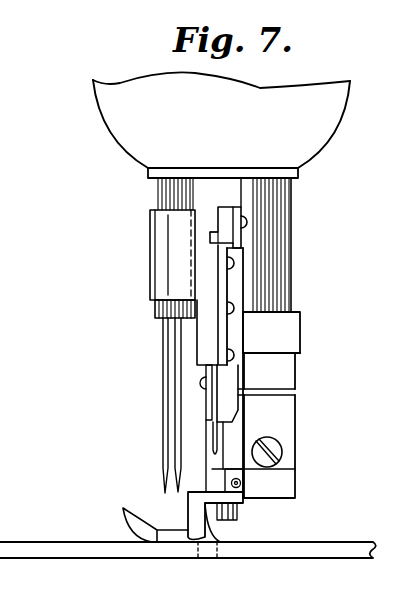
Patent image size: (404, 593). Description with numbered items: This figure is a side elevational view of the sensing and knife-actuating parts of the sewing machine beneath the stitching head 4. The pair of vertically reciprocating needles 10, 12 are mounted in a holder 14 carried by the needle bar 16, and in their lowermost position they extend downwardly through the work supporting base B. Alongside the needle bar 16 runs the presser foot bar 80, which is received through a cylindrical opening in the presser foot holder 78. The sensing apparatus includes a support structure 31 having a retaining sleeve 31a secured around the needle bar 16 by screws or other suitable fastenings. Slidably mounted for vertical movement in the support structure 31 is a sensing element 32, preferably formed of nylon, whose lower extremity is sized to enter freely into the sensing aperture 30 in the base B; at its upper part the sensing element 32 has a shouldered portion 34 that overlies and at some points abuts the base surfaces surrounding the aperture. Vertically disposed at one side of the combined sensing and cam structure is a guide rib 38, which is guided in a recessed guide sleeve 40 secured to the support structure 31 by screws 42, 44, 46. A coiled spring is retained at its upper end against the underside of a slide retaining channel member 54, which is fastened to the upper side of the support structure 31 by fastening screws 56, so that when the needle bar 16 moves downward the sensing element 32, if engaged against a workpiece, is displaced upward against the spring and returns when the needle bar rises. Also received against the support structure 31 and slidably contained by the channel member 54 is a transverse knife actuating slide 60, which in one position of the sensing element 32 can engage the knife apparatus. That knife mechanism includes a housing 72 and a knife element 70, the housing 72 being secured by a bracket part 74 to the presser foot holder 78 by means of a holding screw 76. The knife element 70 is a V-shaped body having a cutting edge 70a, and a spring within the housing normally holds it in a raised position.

The stitching head 4 is at (323, 127).
The needle bar 16 is at (168, 191).
The presser foot bar 80 is at (277, 192).
The retaining sleeve 31a is at (178, 250).
The holder 14 is at (168, 307).
The needle 10 is at (164, 430).
The needle 12 is at (174, 442).
The support structure 31 is at (207, 332).
The slide retaining channel member 54 is at (230, 208).
The fastening screw 56 is at (247, 222).
The knife actuating slide 60 is at (212, 238).
The guide sleeve 40 is at (236, 289).
The screw 42 is at (232, 263).
The screw 44 is at (290, 318).
The screw 46 is at (247, 353).
The presser foot holder 78 is at (279, 374).
The guide rib 38 is at (228, 404).
The bracket part 74 is at (283, 416).
The holding screw 76 is at (282, 447).
The housing 72 is at (213, 468).
The shouldered portion 34 is at (207, 396).
The sensing element 32 is at (213, 441).
The knife element 70 is at (213, 530).
The cutting edge 70a is at (212, 520).
The sensing aperture 30 is at (236, 552).
The work supporting base B is at (317, 550).